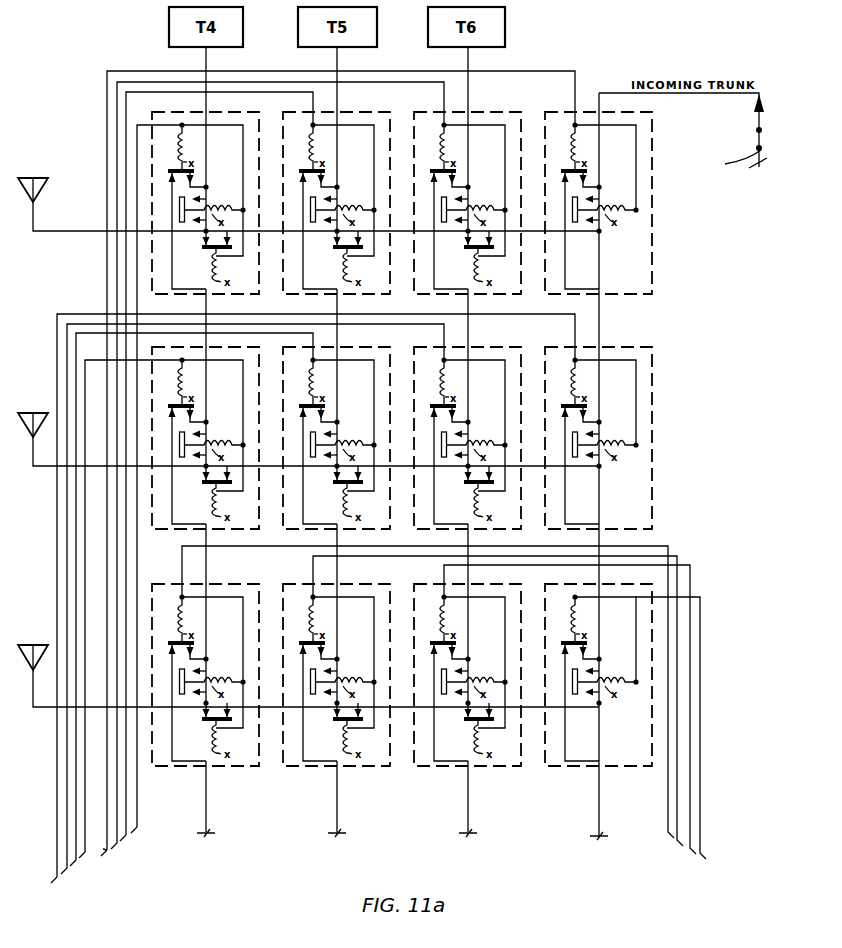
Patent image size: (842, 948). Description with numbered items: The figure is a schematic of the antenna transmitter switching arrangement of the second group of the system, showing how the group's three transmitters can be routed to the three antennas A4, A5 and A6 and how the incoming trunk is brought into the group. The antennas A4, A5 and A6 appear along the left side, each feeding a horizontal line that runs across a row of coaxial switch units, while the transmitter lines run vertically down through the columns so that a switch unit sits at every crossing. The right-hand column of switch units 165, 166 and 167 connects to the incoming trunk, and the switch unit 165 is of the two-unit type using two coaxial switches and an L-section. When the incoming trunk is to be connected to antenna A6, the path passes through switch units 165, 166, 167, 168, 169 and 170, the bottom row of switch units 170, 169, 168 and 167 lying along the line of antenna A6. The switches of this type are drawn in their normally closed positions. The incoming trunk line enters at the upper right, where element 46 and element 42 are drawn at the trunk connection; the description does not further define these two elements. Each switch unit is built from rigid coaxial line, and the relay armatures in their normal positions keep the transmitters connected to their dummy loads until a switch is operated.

The switch unit 165 is at (555, 97).
The switch unit 166 is at (561, 334).
The switch unit 167 is at (582, 586).
The switch unit 168 is at (441, 585).
The switch unit 169 is at (299, 583).
The switch unit 170 is at (174, 583).
The incoming trunk conductor 46 is at (758, 130).
The trunk switch contact 42 is at (732, 164).
The antenna A4 is at (40, 158).
The antenna A5 is at (40, 393).
The antenna A6 is at (40, 627).